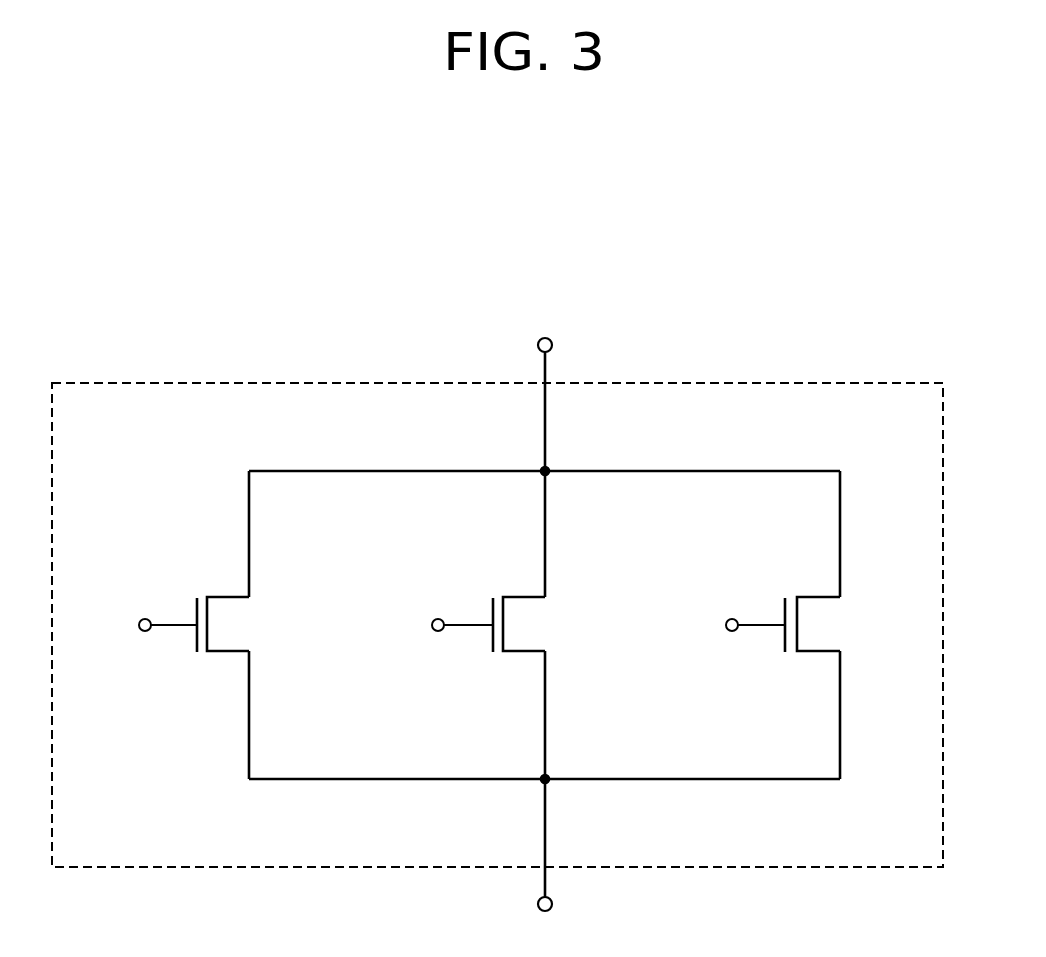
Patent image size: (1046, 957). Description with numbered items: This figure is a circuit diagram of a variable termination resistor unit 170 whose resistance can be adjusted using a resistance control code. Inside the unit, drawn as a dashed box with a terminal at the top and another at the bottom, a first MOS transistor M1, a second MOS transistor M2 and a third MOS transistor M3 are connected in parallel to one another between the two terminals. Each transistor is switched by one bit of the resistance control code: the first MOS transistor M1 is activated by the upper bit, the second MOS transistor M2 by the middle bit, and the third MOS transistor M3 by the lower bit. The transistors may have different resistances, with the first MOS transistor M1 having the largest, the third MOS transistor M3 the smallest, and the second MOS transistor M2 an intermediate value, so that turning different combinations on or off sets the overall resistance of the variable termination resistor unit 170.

The variable termination resistor unit 170 is at (673, 383).
The first MOS transistor M1 is at (175, 624).
The second MOS transistor M2 is at (469, 624).
The third MOS transistor M3 is at (765, 624).